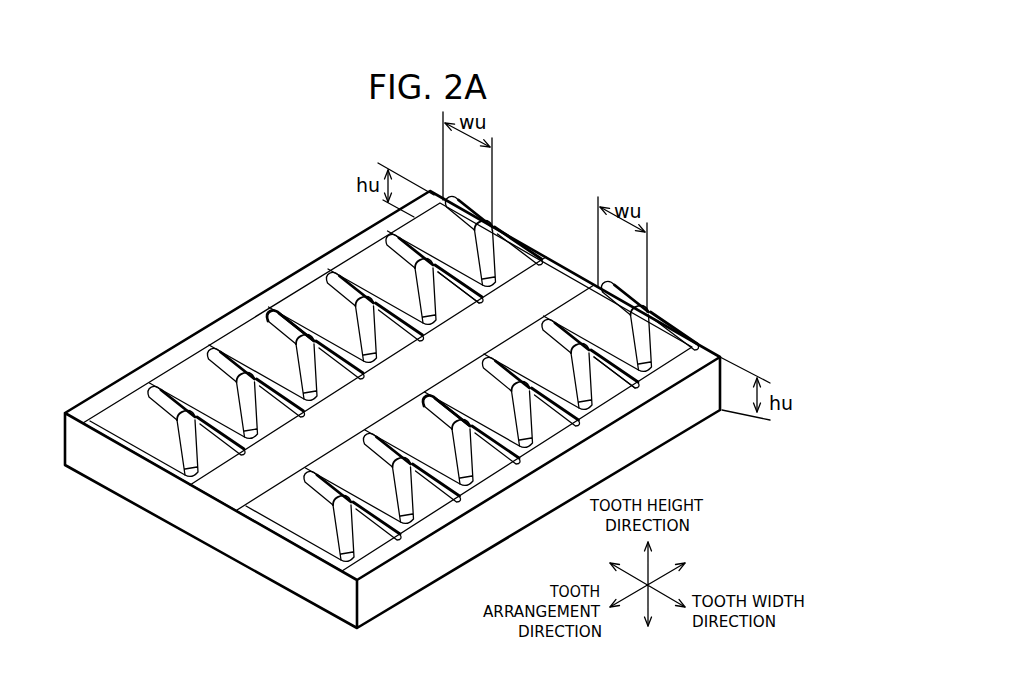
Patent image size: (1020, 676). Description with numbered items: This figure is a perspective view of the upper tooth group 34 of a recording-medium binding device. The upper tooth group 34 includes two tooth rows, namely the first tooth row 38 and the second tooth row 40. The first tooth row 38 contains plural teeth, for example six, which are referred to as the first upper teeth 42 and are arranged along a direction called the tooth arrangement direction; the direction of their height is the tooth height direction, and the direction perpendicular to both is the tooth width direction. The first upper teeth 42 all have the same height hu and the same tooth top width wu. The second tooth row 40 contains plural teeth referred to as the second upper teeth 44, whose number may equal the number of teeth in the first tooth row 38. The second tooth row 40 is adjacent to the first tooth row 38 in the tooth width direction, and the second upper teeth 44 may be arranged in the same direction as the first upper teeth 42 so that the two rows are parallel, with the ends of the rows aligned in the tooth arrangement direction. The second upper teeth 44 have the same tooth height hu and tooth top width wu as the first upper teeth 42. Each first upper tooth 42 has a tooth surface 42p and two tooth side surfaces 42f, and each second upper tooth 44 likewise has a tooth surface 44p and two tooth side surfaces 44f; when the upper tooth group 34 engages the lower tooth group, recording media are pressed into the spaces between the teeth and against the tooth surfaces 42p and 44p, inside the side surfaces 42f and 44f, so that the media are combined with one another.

The upper tooth group 34 is at (197, 205).
The first tooth row 38 is at (691, 288).
The second tooth row 40 is at (541, 183).
The first upper teeth 42 is at (441, 400).
The tooth surface of first upper tooth 42p is at (470, 388).
The tooth side surface of first upper tooth 42f is at (607, 380).
The second upper teeth 44 is at (290, 292).
The tooth surface of second upper tooth 44p is at (323, 313).
The tooth side surface of second upper tooth 44f is at (443, 293).